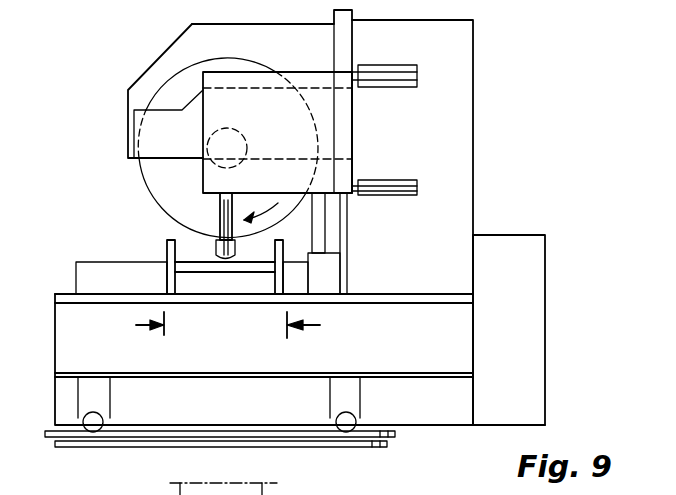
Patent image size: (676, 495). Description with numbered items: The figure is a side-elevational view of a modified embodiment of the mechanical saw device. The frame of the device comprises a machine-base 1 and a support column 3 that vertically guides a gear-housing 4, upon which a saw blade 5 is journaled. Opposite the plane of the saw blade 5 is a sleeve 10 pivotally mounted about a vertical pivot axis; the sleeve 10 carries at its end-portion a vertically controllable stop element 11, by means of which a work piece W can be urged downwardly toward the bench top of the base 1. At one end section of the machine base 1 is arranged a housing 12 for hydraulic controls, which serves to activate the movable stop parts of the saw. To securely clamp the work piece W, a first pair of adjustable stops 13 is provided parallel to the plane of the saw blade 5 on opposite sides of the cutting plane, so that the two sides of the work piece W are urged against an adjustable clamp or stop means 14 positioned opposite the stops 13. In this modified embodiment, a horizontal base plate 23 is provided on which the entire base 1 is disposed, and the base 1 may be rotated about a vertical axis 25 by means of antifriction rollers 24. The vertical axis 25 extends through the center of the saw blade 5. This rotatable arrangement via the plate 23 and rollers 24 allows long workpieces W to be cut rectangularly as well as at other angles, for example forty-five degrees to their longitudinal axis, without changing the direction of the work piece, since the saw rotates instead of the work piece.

The machine-base 1 is at (70, 330).
The support column 3 is at (458, 74).
The gear-housing 4 is at (151, 82).
The saw blade 5 is at (155, 192).
The sleeve 10 is at (307, 131).
The stop element 11 is at (227, 252).
The housing 12 is at (533, 286).
The adjustable stops 13 is at (297, 279).
The stop means 14 is at (90, 277).
The base plate 23 is at (395, 440).
The antifriction rollers 24 is at (85, 425).
The vertical axis 25 is at (220, 444).
The work piece W is at (170, 250).